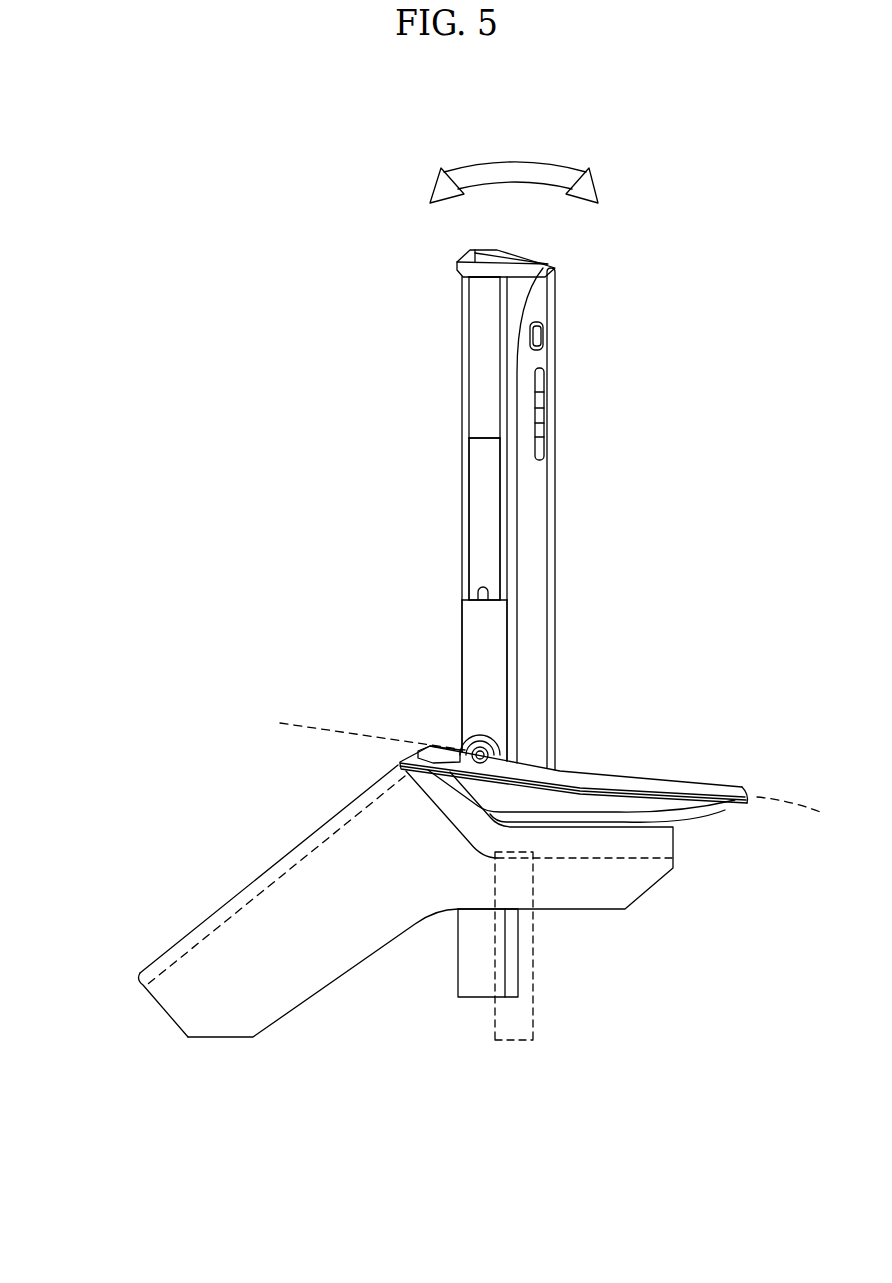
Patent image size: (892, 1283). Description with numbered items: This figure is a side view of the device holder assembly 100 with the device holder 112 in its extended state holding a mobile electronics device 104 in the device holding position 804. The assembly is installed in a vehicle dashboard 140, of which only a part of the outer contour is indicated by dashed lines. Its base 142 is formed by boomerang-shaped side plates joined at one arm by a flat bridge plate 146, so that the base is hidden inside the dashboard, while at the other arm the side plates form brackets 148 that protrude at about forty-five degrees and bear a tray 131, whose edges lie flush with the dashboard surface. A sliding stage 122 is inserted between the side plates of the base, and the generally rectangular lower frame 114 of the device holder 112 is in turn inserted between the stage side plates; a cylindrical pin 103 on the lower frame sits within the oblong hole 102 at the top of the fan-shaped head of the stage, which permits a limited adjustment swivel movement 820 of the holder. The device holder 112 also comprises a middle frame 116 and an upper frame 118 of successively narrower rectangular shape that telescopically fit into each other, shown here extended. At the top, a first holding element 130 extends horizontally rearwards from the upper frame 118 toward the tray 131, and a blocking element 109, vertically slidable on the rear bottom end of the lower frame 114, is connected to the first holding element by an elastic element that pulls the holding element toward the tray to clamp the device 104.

The device holder assembly 100 is at (163, 287).
The adjustment swivel movement 820 is at (435, 196).
The first holding element 130 is at (543, 267).
The upper frame 118 is at (462, 347).
The device holder 112 is at (445, 438).
The device holding position 804 is at (484, 357).
The middle frame 116 is at (462, 530).
The lower frame 114 is at (462, 620).
The mobile electronics device 104 is at (555, 553).
The cylindrical pin 103 is at (480, 735).
The oblong hole 102 is at (492, 752).
The sliding stage 122 is at (462, 748).
The vehicle dashboard 140 is at (310, 728).
The tray 131 is at (620, 823).
The bracket 148 is at (607, 920).
The base 142 is at (288, 1008).
The bridge plate 146 is at (140, 988).
The blocking element 109 is at (520, 1045).